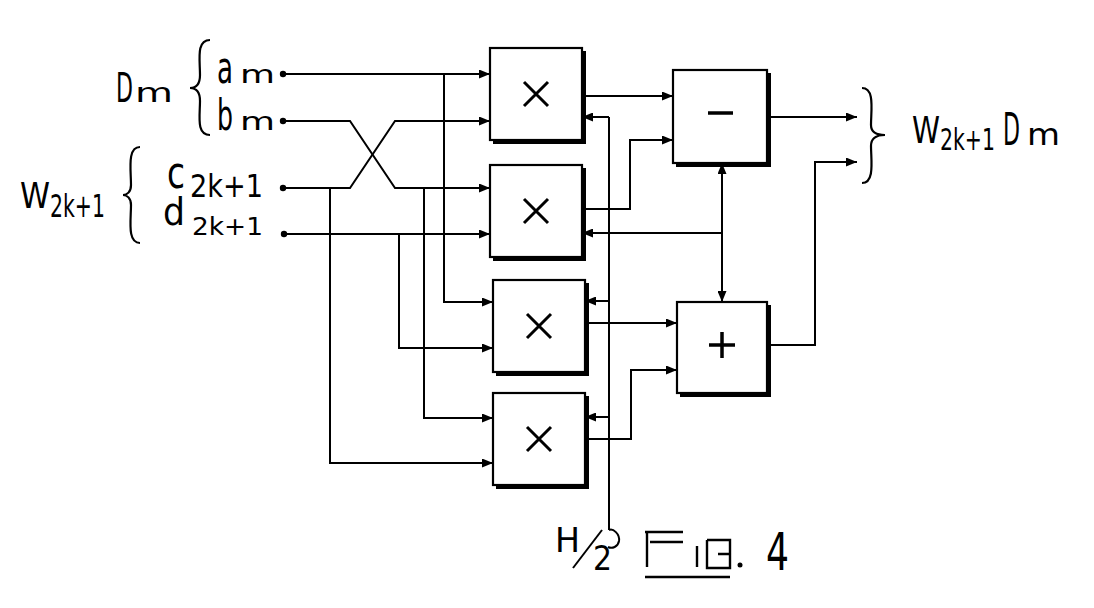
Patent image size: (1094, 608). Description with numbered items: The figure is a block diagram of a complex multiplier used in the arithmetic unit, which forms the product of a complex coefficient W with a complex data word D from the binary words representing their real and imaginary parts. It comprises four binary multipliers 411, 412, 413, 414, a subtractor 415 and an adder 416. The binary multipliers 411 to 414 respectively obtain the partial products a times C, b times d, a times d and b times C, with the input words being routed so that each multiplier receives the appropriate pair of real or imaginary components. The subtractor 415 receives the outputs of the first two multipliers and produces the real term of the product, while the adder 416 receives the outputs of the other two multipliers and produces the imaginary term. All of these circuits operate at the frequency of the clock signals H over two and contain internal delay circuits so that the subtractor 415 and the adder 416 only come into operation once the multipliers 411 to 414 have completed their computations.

The binary multiplier 411 is at (550, 48).
The binary multiplier 412 is at (490, 174).
The binary multiplier 413 is at (493, 288).
The binary multiplier 414 is at (493, 402).
The subtractor 415 is at (767, 76).
The adder 416 is at (742, 302).